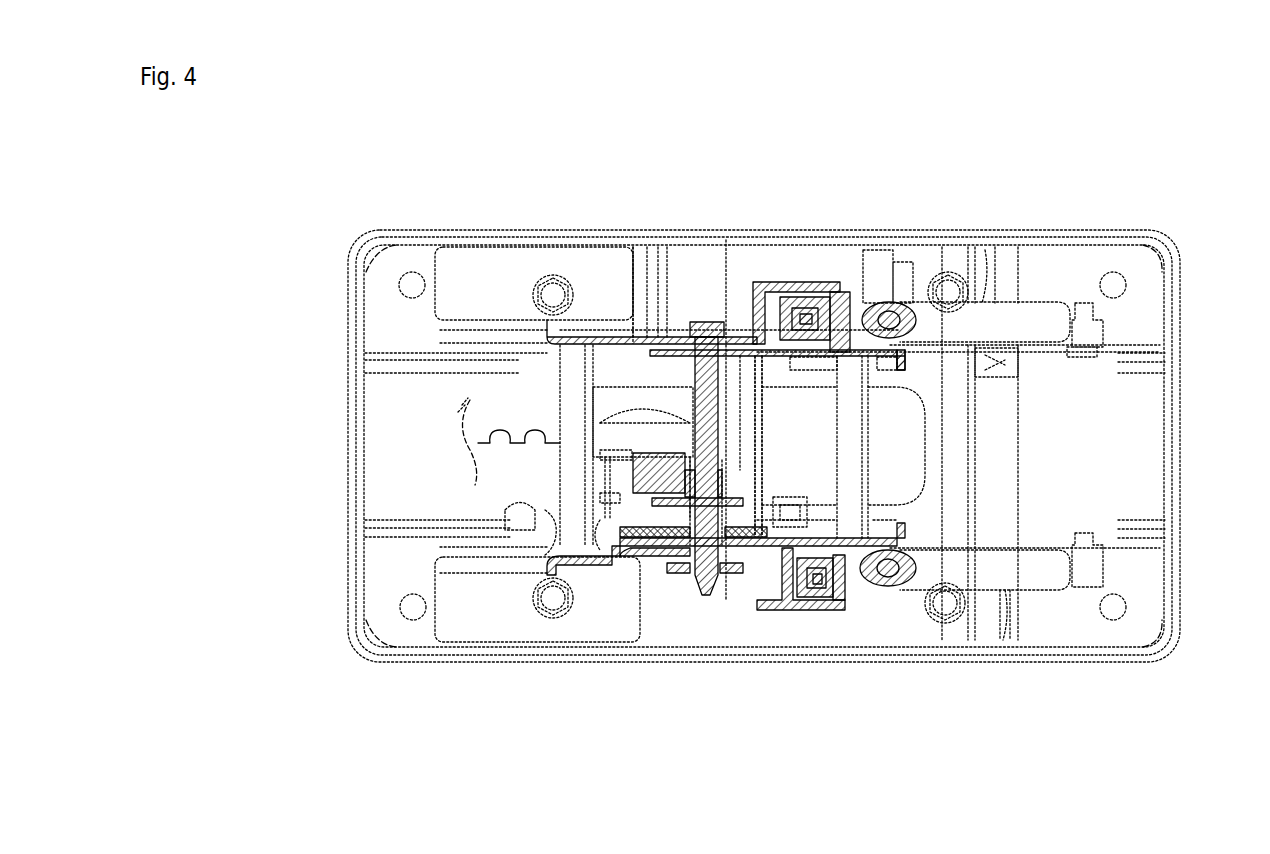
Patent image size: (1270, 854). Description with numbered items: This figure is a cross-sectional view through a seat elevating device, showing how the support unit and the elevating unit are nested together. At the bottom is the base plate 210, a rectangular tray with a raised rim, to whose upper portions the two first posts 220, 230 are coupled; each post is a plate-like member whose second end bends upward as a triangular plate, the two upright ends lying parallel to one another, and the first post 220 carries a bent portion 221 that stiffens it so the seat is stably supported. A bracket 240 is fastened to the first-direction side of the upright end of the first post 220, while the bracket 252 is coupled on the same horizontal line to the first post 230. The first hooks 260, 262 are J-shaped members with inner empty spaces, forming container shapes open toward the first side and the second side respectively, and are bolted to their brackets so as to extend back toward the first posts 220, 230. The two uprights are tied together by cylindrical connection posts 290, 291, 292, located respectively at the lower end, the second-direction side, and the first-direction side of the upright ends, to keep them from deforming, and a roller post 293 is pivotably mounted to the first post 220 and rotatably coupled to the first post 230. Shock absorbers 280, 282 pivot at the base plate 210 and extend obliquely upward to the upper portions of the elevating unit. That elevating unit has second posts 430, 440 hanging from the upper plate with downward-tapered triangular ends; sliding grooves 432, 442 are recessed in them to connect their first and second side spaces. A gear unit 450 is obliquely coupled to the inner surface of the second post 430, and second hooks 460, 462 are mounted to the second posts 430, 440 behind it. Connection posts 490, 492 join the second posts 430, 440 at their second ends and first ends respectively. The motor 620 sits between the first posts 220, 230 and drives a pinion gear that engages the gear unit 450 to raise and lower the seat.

The base plate 210 is at (380, 275).
The first post 220 is at (595, 520).
The bent portion 221 is at (483, 560).
The first post 230 is at (495, 320).
The bracket 240 is at (730, 570).
The bracket 252 is at (737, 345).
The first hook 260 is at (810, 575).
The first hook 262 is at (815, 290).
The shock absorber 280 is at (960, 580).
The shock absorber 282 is at (1000, 315).
The connection post 290 is at (745, 515).
The connection post 291 is at (965, 446).
The connection post 292 is at (545, 540).
The roller post 293 is at (715, 340).
The second post 430 is at (905, 529).
The sliding groove 432 is at (690, 510).
The second post 440 is at (650, 351).
The sliding groove 442 is at (698, 330).
The gear unit 450 is at (630, 530).
The second hook 460 is at (872, 585).
The second hook 462 is at (890, 310).
The connection post 490 is at (858, 399).
The connection post 492 is at (650, 335).
The motor 620 is at (480, 441).